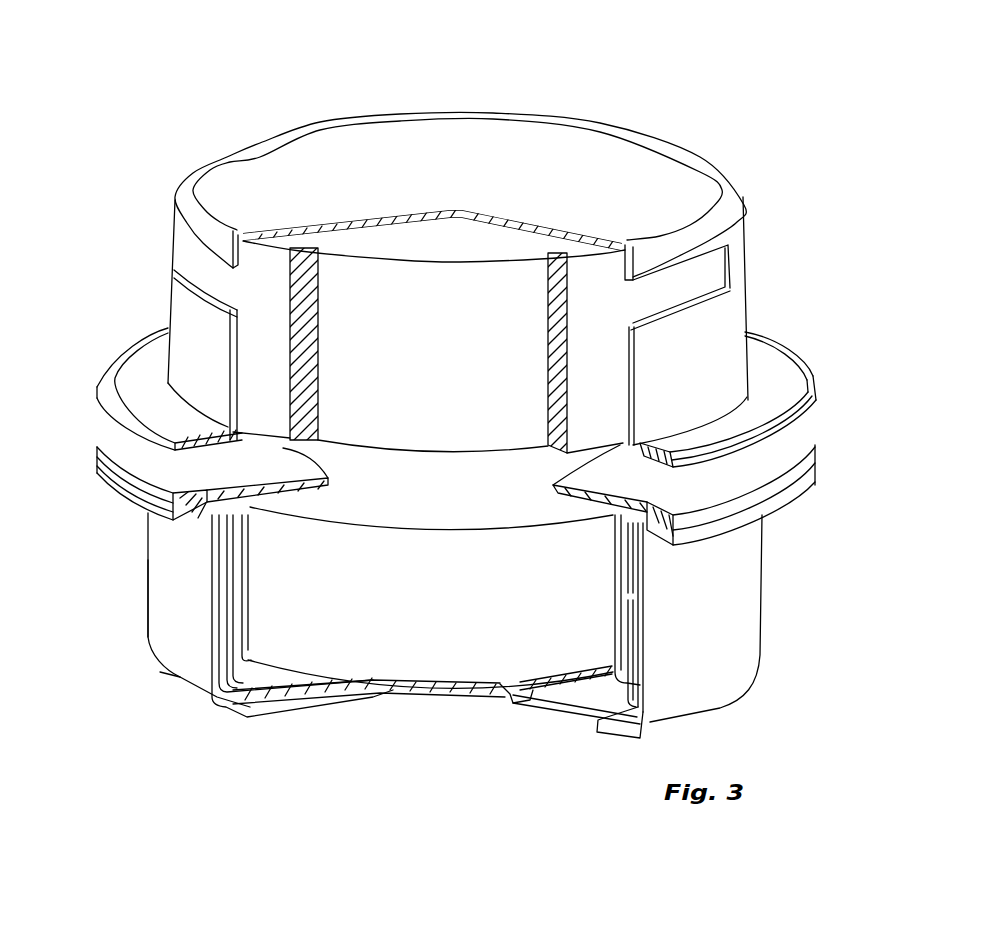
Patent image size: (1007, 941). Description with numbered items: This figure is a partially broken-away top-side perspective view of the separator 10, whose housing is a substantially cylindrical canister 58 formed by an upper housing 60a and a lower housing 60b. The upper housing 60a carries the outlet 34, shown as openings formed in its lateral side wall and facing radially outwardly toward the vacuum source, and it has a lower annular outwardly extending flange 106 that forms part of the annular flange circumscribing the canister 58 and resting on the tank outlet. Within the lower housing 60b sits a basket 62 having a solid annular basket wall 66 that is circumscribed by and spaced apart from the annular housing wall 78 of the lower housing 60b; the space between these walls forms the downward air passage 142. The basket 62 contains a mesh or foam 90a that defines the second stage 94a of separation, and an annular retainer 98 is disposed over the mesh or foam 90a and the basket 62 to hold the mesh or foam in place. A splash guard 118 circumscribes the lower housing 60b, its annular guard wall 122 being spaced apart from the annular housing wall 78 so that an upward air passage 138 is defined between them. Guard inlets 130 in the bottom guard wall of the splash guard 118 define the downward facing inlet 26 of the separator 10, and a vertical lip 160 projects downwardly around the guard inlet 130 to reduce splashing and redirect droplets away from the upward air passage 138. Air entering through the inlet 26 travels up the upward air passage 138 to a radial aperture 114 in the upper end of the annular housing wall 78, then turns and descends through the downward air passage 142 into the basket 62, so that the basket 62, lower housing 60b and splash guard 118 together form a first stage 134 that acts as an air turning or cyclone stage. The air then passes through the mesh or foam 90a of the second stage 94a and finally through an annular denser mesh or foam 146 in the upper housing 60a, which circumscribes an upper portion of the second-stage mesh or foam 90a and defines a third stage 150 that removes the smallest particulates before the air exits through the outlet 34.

The separator 10 is at (461, 97).
The canister 58 is at (578, 98).
The mesh or foam 90a is at (363, 273).
The second stage 94a is at (413, 283).
The denser mesh or foam 146 is at (598, 275).
The third stage 150 is at (630, 297).
The upper housing 60a is at (747, 217).
The outlet 34 is at (193, 270).
The lower annular outwardly extending flange 106 is at (151, 363).
The annular retainer 98 is at (228, 483).
The radial aperture 114 is at (637, 558).
The annular guard wall 122 is at (160, 537).
The lower housing 60b is at (638, 600).
The upward air passage 138 is at (225, 573).
The basket 62 is at (620, 627).
The downward air passage 142 is at (238, 617).
The annular housing wall 78 is at (630, 652).
The first stage 134 is at (165, 668).
The annular basket wall 66 is at (618, 658).
The splash guard 118 is at (187, 693).
The inlet 26 is at (540, 703).
The guard inlet 130 is at (578, 703).
The vertical lip 160 is at (594, 733).